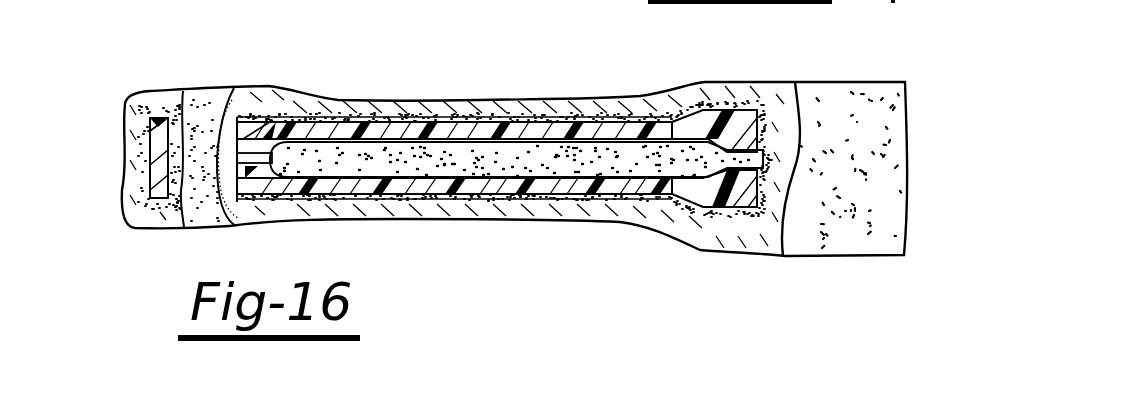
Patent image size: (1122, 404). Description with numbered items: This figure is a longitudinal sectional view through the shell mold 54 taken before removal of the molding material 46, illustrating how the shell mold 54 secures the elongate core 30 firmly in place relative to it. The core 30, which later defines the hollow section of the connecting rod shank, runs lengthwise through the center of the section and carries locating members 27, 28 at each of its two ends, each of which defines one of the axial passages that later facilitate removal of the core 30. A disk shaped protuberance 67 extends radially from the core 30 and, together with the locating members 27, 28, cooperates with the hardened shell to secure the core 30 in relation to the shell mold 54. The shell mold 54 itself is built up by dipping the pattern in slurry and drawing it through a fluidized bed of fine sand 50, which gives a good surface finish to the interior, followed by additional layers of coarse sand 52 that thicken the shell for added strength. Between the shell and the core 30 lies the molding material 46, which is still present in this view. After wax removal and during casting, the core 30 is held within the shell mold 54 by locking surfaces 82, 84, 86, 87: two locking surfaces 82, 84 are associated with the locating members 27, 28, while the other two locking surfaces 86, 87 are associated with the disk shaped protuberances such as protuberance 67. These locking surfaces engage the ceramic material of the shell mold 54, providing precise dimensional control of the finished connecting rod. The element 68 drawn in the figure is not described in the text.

The locating member 27 is at (268, 125).
The locating member 28 is at (764, 160).
The elongate core 30 is at (515, 165).
The molding material 46 is at (162, 203).
The fine sand 50 is at (155, 112).
The coarse sand 52 is at (128, 186).
The shell mold 54 is at (477, 102).
The disk shaped protuberance 67 is at (657, 172).
The conductor bar 68 is at (673, 124).
The locking surface 82 is at (222, 152).
The locking surface 84 is at (783, 256).
The locking surface 86 is at (648, 125).
The locking surface 87 is at (646, 200).